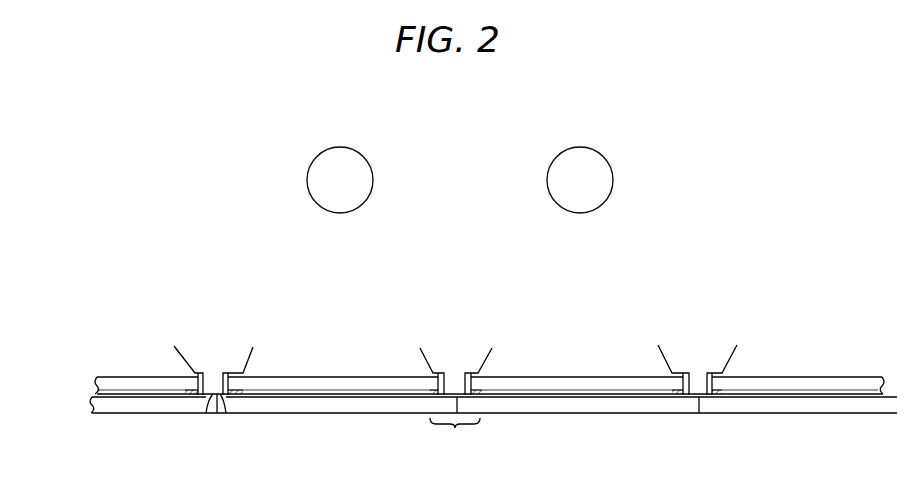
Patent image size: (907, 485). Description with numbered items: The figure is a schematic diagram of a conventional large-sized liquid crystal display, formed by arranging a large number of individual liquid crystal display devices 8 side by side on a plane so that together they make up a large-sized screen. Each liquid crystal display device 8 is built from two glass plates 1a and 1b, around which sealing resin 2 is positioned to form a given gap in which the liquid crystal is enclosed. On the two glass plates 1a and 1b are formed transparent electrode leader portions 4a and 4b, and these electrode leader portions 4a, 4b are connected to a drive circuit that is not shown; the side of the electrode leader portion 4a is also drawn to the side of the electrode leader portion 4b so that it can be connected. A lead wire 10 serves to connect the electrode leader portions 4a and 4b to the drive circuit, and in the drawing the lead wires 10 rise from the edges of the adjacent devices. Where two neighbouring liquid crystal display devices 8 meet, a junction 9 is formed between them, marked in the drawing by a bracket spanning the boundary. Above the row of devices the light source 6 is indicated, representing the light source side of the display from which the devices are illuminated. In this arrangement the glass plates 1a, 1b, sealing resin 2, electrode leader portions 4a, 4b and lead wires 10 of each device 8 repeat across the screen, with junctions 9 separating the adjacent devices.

The glass plate 1a is at (95, 380).
The glass plate 1b is at (92, 403).
The sealing resin 2 is at (195, 391).
The transparent electrode leader portion 4a is at (208, 413).
The transparent electrode leader portion 4b is at (227, 413).
The light source 6 is at (310, 161).
The liquid crystal display device 8 is at (145, 418).
The junction 9 is at (455, 437).
The lead wire 10 is at (177, 347).